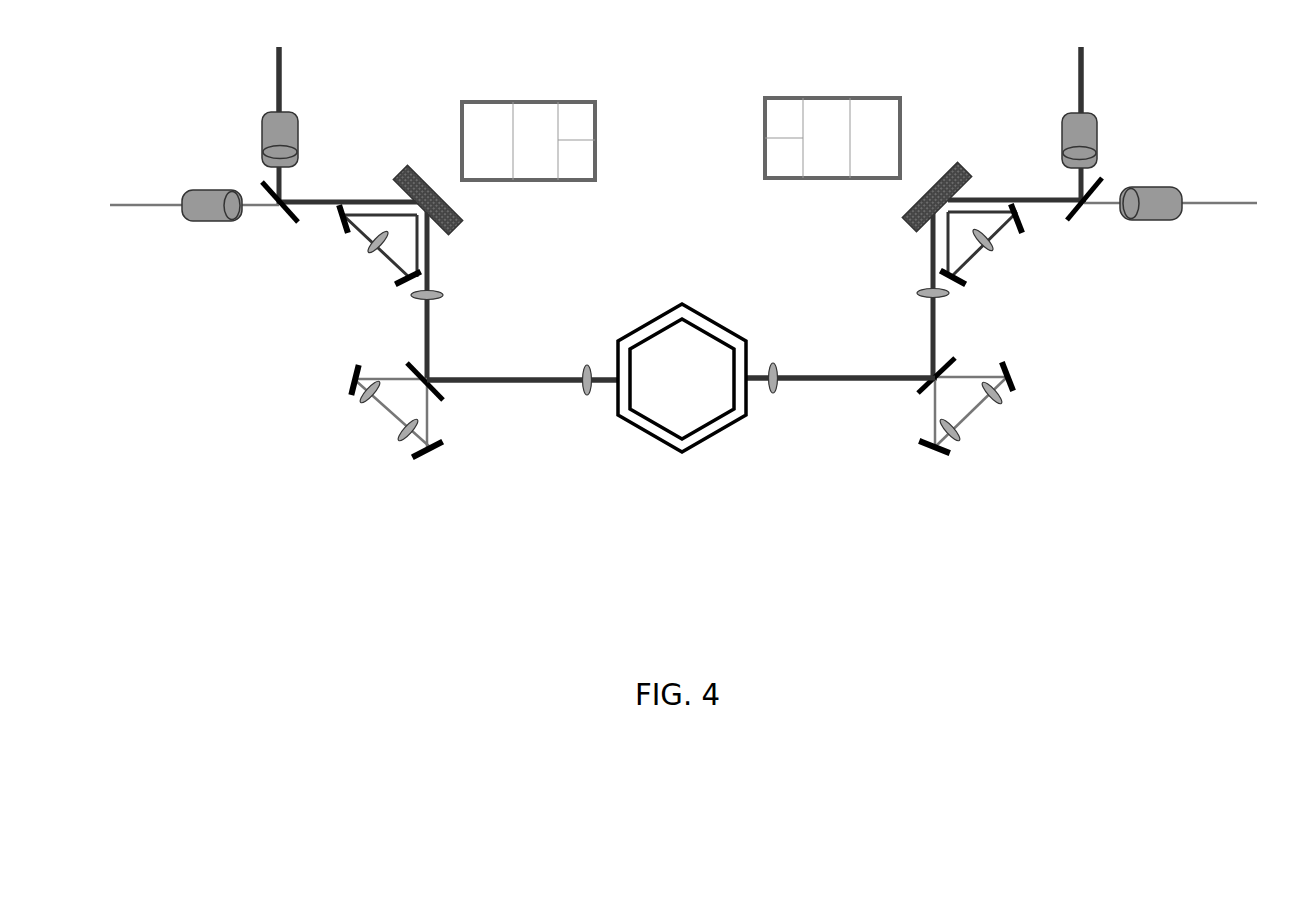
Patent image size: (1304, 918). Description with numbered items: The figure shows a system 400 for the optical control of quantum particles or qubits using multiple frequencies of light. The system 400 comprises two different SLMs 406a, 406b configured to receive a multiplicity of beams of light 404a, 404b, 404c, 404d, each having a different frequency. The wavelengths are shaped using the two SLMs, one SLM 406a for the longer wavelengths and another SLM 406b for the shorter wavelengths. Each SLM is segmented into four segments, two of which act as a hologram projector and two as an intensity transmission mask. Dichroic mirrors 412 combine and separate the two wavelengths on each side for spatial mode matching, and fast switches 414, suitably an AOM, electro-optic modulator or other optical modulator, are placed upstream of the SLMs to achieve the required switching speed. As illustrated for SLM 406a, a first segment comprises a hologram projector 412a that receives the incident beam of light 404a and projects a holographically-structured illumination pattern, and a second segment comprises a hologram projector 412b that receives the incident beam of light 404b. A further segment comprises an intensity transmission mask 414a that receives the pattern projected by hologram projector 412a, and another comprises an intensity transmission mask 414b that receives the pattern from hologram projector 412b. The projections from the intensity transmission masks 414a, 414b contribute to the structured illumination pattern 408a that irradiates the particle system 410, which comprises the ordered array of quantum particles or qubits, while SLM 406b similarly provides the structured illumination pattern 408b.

The system 400 is at (868, 522).
The beam of light 404a is at (273, 68).
The beam of light 404b is at (160, 208).
The beam of light 404c is at (1080, 80).
The beam of light 404d is at (1230, 207).
The SLM 406a is at (463, 212).
The SLM 406b is at (908, 200).
The structured illumination pattern 408a is at (502, 382).
The structured illumination pattern 408b is at (798, 382).
The particle system 410 is at (702, 388).
The dichroic mirrors 412 is at (403, 363).
The hologram projector 412a is at (485, 108).
The hologram projector 412b is at (525, 102).
The fast switches 414 is at (262, 128).
The intensity transmission mask 414a is at (598, 120).
The intensity transmission mask 414b is at (598, 155).